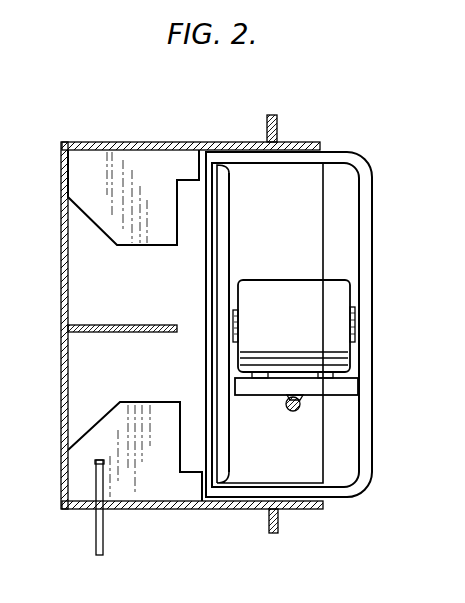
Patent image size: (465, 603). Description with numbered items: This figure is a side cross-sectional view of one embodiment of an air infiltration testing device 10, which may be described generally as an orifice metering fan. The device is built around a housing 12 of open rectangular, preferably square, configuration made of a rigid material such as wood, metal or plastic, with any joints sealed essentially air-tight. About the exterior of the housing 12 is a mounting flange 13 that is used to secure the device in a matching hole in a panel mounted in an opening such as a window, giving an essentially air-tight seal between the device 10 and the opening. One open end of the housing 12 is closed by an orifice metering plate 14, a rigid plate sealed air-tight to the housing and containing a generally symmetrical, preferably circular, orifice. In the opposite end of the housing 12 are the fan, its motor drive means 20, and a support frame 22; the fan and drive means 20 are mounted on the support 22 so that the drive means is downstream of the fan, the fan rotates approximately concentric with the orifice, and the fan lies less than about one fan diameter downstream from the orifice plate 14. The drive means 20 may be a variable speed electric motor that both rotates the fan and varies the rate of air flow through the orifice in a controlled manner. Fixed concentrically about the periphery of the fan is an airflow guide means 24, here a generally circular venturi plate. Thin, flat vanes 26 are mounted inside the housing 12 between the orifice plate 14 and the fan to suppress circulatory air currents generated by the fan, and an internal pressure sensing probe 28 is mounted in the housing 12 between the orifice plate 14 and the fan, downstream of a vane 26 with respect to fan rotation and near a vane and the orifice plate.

The air infiltration testing device 10 is at (386, 228).
The housing 12 is at (147, 142).
The mounting flange 13 is at (278, 128).
The orifice metering plate 14 is at (60, 182).
The motor drive means 20 is at (337, 340).
The support frame 22 is at (353, 160).
The airflow guide means 24 is at (222, 460).
The vanes 26 is at (175, 168).
The internal pressure sensing probe 28 is at (95, 537).